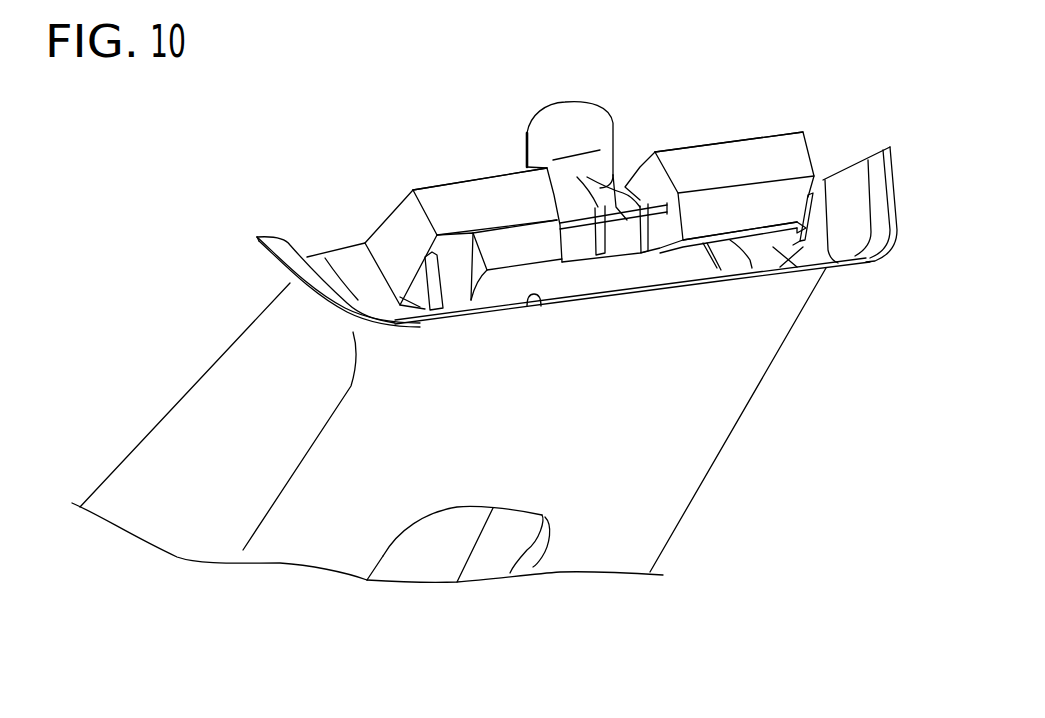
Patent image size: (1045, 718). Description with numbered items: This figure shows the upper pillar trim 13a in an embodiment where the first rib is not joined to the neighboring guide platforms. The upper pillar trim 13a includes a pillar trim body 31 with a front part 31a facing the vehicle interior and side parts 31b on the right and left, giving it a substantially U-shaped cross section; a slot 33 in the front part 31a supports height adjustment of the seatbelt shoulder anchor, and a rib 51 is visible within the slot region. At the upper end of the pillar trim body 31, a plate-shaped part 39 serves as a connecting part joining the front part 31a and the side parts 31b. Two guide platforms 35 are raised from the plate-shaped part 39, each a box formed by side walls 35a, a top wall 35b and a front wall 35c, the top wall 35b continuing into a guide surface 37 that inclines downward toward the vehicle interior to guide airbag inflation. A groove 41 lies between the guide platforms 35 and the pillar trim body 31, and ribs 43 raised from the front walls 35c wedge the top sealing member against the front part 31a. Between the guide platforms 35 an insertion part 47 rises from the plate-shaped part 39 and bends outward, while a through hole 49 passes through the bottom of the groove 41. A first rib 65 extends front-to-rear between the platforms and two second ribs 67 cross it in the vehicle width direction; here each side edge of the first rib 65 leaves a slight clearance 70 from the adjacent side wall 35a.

The upper pillar trim 13a is at (305, 165).
The pillar trim body 31 is at (736, 424).
The front part 31a is at (670, 470).
The side part 31b is at (193, 415).
The slot 33 is at (385, 557).
The guide platform 35 is at (440, 184).
The side wall 35a is at (393, 232).
The top wall 35b is at (478, 194).
The front wall 35c is at (453, 293).
The guide surface 37 is at (510, 243).
The plate-shaped part 39 is at (350, 260).
The groove 41 is at (830, 247).
The rib 43 is at (423, 300).
The insertion part 47 is at (553, 104).
The through hole 49 is at (533, 300).
The rib 51 is at (510, 552).
The first rib 65 is at (603, 245).
The second rib 67 is at (580, 243).
The clearance 70 is at (527, 185).